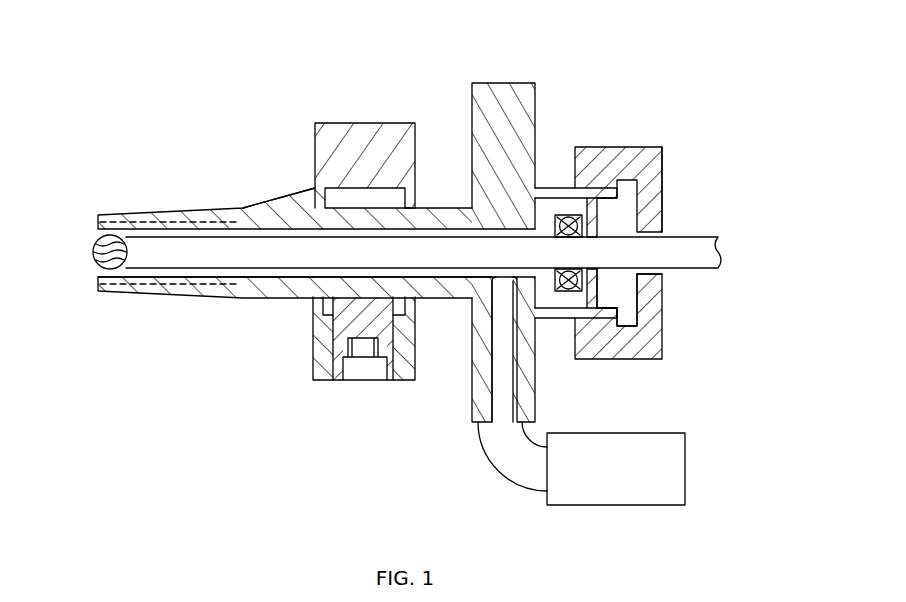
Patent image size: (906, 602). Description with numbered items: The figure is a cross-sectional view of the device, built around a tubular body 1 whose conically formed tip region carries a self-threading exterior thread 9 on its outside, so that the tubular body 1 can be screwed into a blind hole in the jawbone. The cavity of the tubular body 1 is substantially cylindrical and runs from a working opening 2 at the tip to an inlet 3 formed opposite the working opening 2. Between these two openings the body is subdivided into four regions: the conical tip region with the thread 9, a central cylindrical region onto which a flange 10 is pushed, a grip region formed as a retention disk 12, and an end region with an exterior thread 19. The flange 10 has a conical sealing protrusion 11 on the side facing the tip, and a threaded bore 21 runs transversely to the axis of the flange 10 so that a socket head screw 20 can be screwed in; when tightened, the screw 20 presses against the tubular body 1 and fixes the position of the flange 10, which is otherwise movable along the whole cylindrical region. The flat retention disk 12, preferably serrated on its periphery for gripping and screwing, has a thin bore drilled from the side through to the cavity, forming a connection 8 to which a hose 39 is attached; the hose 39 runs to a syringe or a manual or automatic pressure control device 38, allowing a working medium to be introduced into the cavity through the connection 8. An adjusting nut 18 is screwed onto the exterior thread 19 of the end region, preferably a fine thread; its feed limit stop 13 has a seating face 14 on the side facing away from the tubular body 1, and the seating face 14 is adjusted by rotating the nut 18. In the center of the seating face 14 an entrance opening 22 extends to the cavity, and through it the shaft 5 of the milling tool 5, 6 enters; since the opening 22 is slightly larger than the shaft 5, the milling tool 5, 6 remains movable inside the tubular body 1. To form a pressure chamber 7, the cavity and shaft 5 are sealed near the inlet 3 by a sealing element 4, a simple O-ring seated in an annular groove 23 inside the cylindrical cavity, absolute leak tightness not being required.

The tubular body 1 is at (423, 287).
The working opening 2 is at (95, 268).
The inlet 3 is at (598, 275).
The sealing element 4 is at (576, 214).
The shaft 5 is at (533, 250).
The milling tool 6 is at (95, 237).
The pressure chamber 7 is at (258, 272).
The connection 8 is at (463, 418).
The self-threading exterior thread 9 is at (197, 213).
The flange 10 is at (375, 148).
The conical sealing protrusion 11 is at (283, 195).
The retention disk 12 is at (512, 100).
The feed limit stop 13 is at (645, 207).
The seating face 14 is at (663, 212).
The adjusting nut 18 is at (622, 348).
The exterior thread 19 is at (552, 196).
The socket head screw 20 is at (330, 312).
The threaded bore 21 is at (380, 364).
The entrance opening 22 is at (647, 275).
The annular groove 23 is at (584, 214).
The pressure control device 38 is at (688, 470).
The hose 39 is at (490, 468).